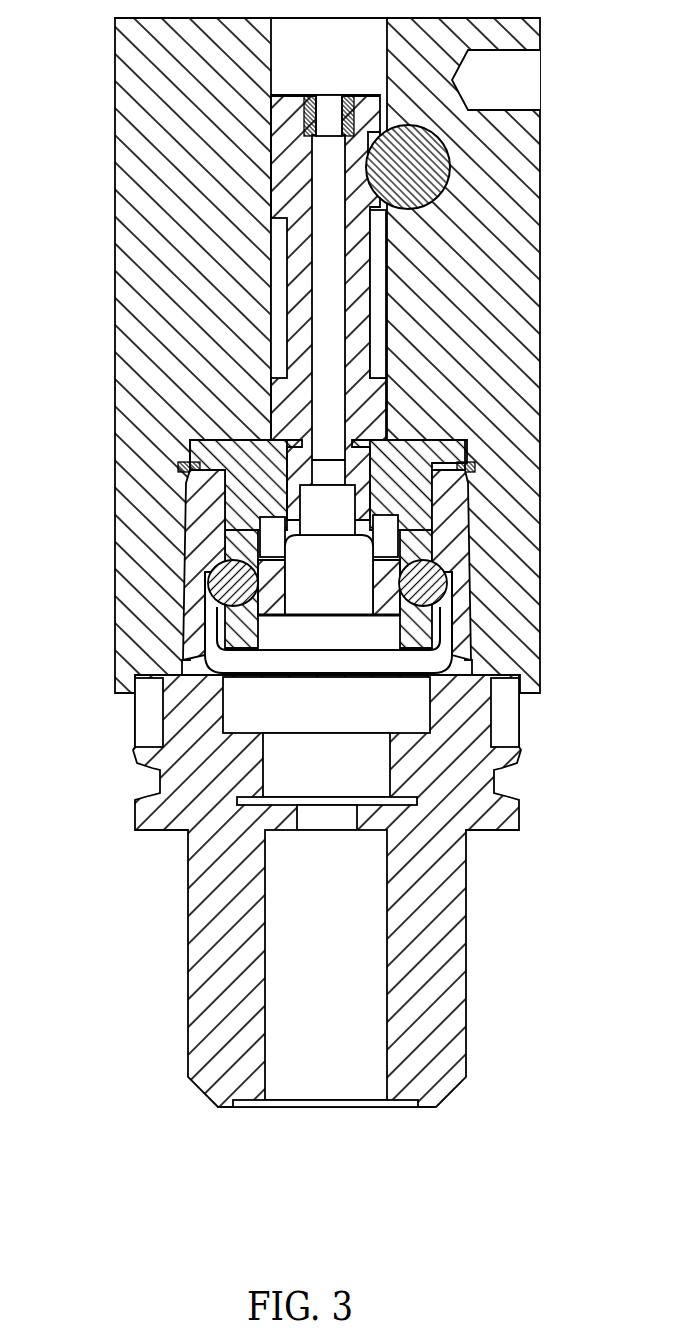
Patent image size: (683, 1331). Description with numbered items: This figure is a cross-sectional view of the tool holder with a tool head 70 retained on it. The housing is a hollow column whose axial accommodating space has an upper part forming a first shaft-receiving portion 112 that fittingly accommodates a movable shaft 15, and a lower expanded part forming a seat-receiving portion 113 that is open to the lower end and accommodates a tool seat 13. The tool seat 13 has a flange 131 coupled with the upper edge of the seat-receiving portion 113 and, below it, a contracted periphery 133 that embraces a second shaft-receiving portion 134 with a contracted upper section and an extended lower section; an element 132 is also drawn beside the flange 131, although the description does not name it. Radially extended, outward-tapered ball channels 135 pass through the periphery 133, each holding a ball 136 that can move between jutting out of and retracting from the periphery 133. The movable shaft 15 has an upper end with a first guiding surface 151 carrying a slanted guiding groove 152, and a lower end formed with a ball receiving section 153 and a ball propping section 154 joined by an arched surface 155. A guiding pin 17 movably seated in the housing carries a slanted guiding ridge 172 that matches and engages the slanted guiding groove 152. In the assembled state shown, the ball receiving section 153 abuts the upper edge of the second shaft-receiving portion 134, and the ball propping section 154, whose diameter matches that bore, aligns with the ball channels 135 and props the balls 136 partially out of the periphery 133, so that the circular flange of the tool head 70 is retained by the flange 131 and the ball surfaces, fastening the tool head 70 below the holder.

The tool seat 13 is at (332, 537).
The movable shaft 15 is at (300, 296).
The guiding pin 17 is at (410, 185).
The tool head 70 is at (455, 962).
The first shaft-receiving portion 112 is at (380, 282).
The seat-receiving portion 113 is at (257, 470).
The flange 131 is at (463, 441).
The seal ring 132 is at (472, 467).
The contracted periphery 133 is at (425, 498).
The second shaft-receiving portion 134 is at (392, 536).
The ball channel 135 is at (228, 617).
The ball 136 is at (430, 583).
The first guiding surface 151 is at (383, 107).
The slanted guiding groove 152 is at (342, 150).
The ball receiving section 153 is at (250, 518).
The ball propping section 154 is at (215, 572).
The arched surface 155 is at (272, 548).
The slanted guiding ridge 172 is at (447, 152).